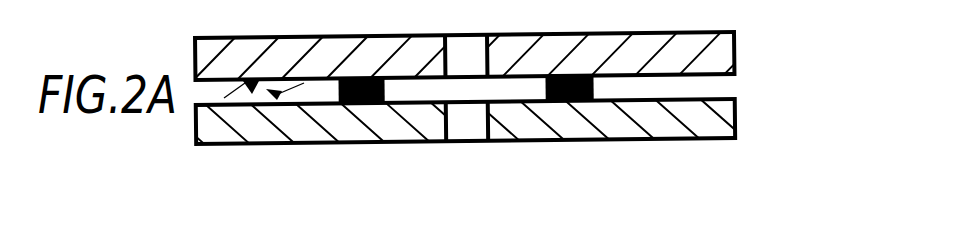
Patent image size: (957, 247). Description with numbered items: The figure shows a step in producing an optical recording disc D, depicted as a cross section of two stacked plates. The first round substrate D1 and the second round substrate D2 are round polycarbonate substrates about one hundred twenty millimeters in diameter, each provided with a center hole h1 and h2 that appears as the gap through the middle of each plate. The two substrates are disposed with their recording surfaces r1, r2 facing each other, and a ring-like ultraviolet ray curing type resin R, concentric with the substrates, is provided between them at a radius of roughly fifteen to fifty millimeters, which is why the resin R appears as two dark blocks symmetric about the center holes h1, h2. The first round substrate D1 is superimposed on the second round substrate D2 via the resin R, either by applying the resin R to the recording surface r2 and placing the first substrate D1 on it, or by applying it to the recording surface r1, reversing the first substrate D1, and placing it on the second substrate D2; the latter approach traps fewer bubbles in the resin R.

The optical recording disc D is at (491, 87).
The first round substrate D1 is at (733, 57).
The second round substrate D2 is at (733, 118).
The ultraviolet ray curing type resin R is at (593, 88).
The center hole h1 is at (451, 57).
The center hole h2 is at (451, 123).
The recording surface r1 is at (222, 100).
The recording surface r2 is at (304, 82).